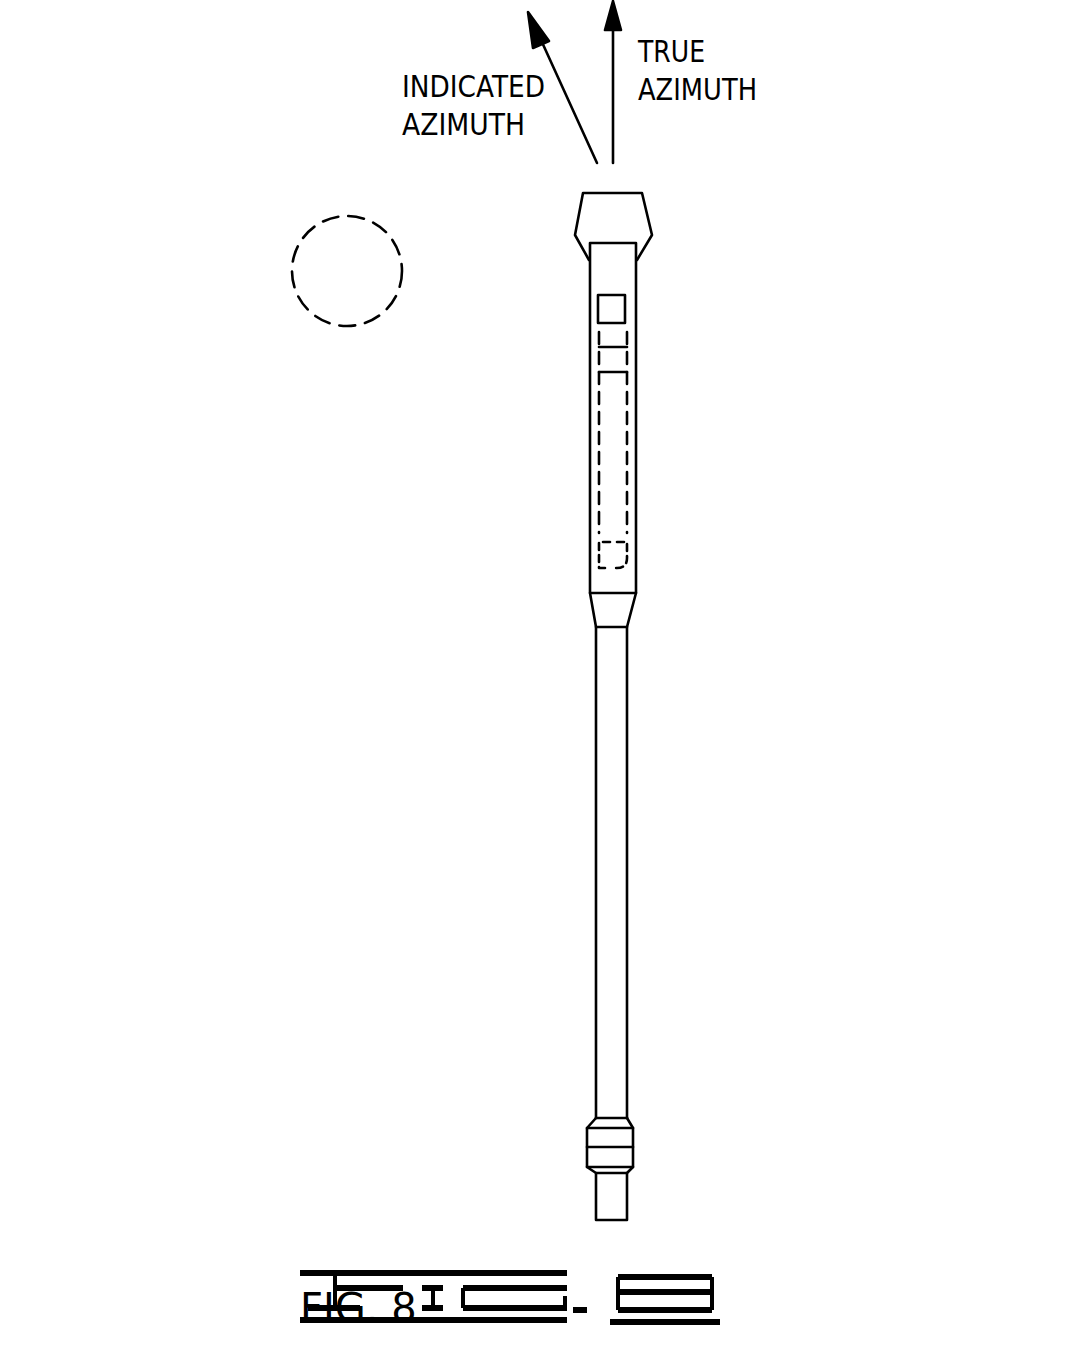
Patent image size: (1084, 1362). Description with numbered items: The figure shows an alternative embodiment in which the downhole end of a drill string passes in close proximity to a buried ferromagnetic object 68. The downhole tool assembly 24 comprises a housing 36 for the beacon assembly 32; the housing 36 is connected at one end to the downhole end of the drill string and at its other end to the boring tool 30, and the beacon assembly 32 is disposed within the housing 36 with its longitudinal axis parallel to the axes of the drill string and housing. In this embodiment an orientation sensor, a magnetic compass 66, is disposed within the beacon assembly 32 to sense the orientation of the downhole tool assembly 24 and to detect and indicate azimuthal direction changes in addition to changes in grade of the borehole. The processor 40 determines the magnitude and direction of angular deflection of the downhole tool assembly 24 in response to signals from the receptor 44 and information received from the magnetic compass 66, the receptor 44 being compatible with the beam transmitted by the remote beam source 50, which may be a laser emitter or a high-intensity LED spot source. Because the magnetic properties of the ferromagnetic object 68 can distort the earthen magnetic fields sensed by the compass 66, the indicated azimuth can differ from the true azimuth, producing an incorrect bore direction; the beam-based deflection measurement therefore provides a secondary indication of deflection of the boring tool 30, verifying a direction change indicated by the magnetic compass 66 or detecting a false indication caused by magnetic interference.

The downhole tool assembly 24 is at (647, 696).
The boring tool 30 is at (648, 213).
The beacon assembly 32 is at (636, 442).
The housing 36 is at (636, 573).
The processor 40 is at (627, 360).
The receptor 44 is at (622, 373).
The remote beam source 50 is at (627, 555).
The magnetic compass 66 is at (598, 304).
The ferromagnetic object 68 is at (300, 285).